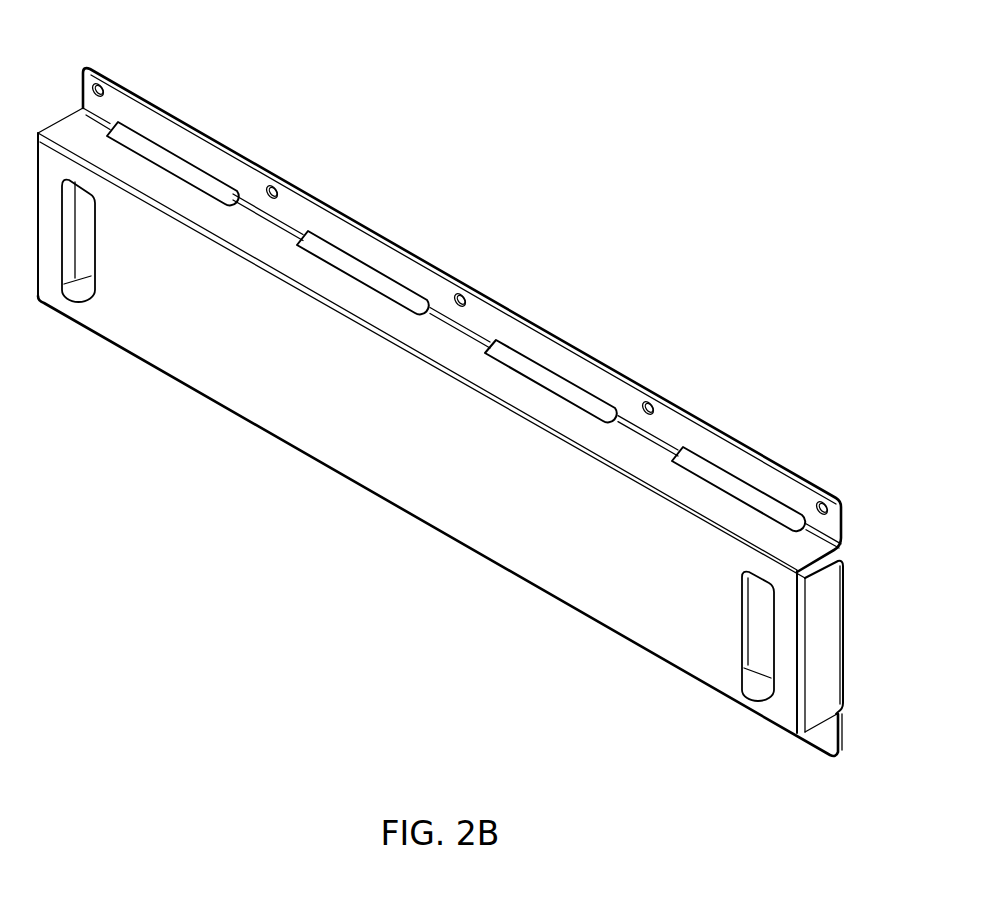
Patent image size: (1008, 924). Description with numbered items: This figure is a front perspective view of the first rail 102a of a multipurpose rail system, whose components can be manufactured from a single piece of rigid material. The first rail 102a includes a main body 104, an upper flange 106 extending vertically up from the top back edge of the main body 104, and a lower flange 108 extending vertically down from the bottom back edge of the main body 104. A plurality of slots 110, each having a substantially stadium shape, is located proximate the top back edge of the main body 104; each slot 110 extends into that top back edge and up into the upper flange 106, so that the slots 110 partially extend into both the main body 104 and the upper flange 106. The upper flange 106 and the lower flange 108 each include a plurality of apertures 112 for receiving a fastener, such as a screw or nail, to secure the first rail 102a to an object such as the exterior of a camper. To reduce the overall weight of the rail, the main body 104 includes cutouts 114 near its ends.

The first rail 102a is at (673, 126).
The main body 104 is at (333, 415).
The upper flange 106 is at (403, 242).
The lower flange 108 is at (813, 745).
The slots 110 is at (166, 157).
The apertures 112 is at (100, 82).
The cutouts 114 is at (98, 250).